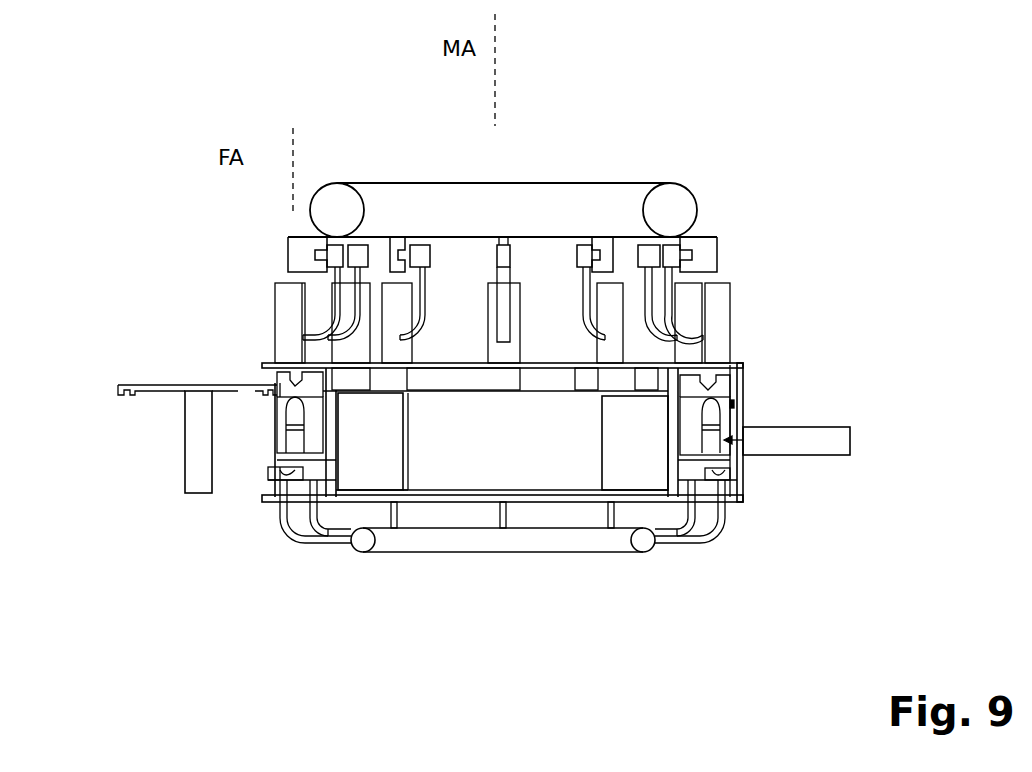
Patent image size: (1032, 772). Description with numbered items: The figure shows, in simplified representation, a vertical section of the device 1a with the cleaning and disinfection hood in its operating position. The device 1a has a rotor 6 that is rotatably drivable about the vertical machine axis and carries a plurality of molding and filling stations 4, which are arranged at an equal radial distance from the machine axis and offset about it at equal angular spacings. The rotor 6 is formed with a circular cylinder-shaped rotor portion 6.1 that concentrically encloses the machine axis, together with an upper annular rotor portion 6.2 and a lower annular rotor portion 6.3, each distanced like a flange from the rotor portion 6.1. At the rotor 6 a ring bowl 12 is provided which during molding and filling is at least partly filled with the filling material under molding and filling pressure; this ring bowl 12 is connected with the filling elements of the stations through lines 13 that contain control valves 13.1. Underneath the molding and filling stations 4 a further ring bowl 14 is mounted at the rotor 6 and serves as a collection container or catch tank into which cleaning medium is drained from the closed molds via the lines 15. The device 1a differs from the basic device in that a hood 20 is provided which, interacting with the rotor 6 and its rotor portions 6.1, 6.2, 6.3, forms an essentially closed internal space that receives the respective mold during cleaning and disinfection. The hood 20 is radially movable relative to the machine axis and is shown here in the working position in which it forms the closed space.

The device 1a is at (760, 141).
The molding and filling station 4 is at (256, 470).
The rotor 6 is at (579, 506).
The rotor portion 6.1 is at (512, 457).
The rotor portion 6.2 is at (457, 393).
The rotor portion 6.3 is at (540, 497).
The ring bowl 12 is at (580, 205).
The line 13 is at (423, 303).
The control valve 13.1 is at (418, 243).
The ring bowl 14 is at (450, 553).
The line 15 is at (283, 525).
The hood 20 is at (742, 402).